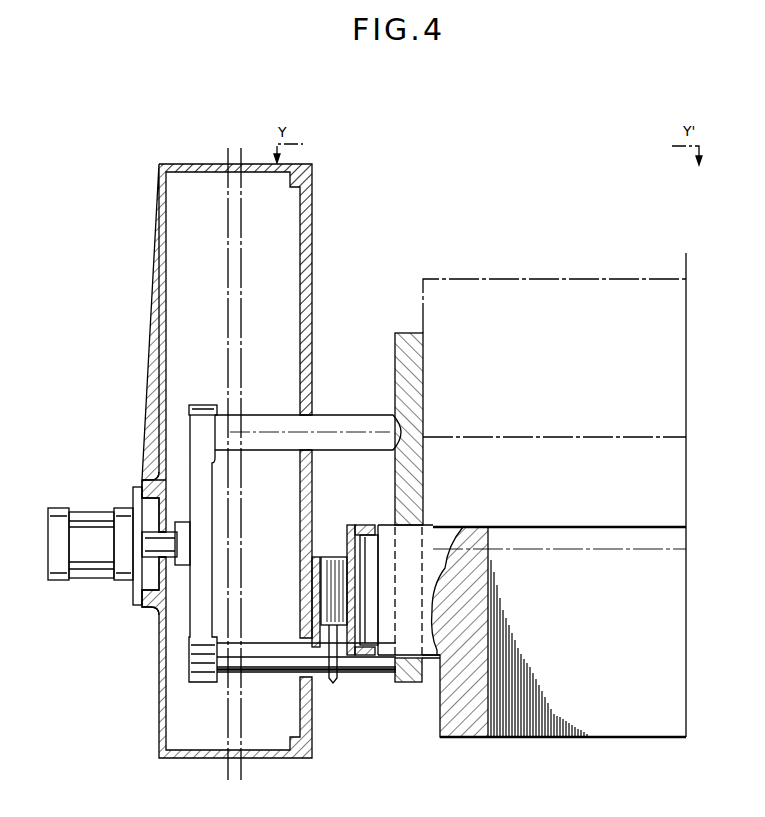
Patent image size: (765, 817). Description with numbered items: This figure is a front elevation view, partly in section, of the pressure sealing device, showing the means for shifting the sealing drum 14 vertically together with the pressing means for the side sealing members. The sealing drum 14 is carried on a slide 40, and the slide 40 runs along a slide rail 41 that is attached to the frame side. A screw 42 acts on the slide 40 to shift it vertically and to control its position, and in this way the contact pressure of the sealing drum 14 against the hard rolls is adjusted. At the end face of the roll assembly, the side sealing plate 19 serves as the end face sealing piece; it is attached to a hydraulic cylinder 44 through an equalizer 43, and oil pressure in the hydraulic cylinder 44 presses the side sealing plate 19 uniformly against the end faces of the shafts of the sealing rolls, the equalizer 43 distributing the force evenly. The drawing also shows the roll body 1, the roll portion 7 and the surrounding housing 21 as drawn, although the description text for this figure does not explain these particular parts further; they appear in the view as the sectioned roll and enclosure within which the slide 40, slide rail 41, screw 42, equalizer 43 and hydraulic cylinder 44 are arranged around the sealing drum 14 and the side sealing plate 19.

The roller 1 is at (457, 279).
The roller core 7 is at (681, 469).
The sealing drum 14 is at (440, 726).
The side sealing plate 19 is at (400, 334).
The housing 21 is at (312, 241).
The slide 40 is at (360, 535).
The slide rail 41 is at (318, 557).
The screw 42 is at (334, 685).
The equalizer 43 is at (190, 410).
The hydraulic cylinder 44 is at (67, 583).